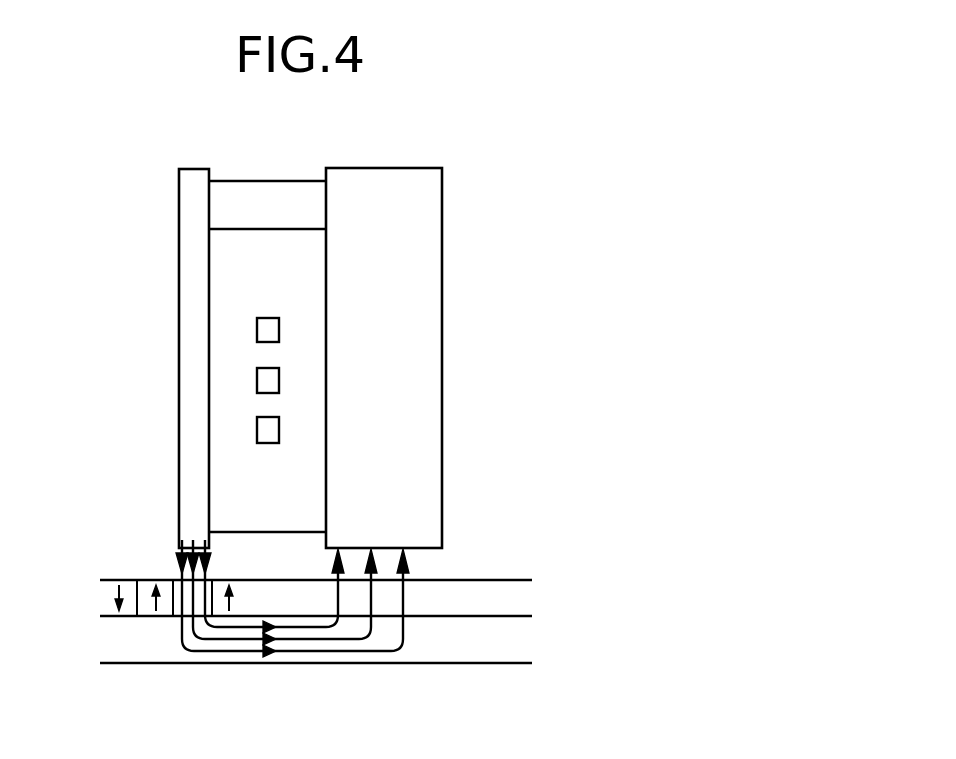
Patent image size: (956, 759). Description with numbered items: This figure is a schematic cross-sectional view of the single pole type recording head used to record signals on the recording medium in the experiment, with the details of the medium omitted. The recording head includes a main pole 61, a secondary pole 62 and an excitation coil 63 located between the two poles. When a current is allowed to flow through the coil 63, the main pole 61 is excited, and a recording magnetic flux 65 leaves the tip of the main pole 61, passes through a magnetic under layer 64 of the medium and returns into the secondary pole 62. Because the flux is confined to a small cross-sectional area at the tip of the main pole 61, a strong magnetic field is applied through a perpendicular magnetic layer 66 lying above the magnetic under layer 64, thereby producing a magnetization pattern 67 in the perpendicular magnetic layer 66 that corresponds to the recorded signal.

The main pole 61 is at (188, 246).
The secondary pole 62 is at (420, 266).
The excitation coil 63 is at (279, 433).
The magnetic under layer 64 is at (700, 642).
The recording magnetic flux 65 is at (318, 648).
The perpendicular magnetic layer 66 is at (805, 598).
The magnetization pattern 67 is at (115, 600).